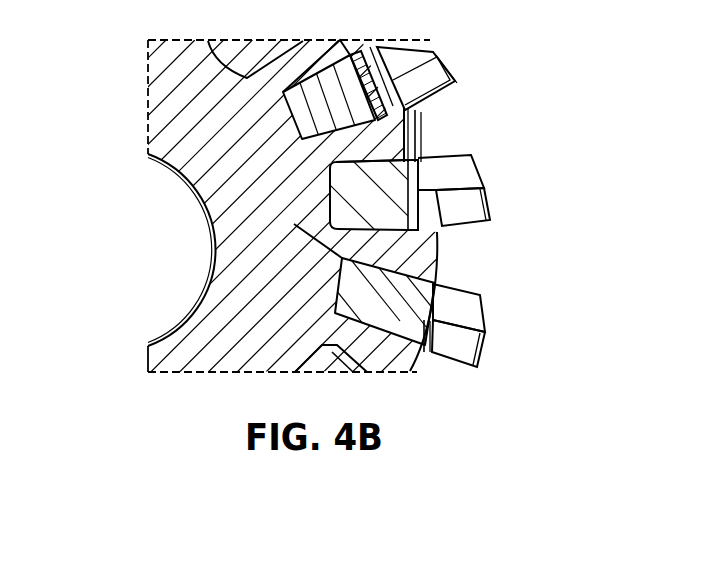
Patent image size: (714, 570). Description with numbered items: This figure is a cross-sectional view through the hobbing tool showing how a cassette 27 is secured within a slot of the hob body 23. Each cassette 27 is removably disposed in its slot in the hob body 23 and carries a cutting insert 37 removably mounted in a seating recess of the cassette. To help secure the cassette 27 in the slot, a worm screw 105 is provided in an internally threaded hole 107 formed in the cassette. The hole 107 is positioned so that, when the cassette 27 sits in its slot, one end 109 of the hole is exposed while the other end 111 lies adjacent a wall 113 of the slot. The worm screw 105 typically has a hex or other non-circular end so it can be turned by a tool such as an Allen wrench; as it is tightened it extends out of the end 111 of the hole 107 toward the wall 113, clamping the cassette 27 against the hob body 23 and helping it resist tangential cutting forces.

The hob body 23 is at (200, 214).
The cassette 27 is at (481, 163).
The cutting insert 37 is at (473, 213).
The worm screw 105 is at (406, 112).
The internally threaded hole 107 is at (405, 233).
The one end of hole 109 is at (420, 143).
The other end of hole 111 is at (334, 228).
The wall of the slot 113 is at (336, 163).